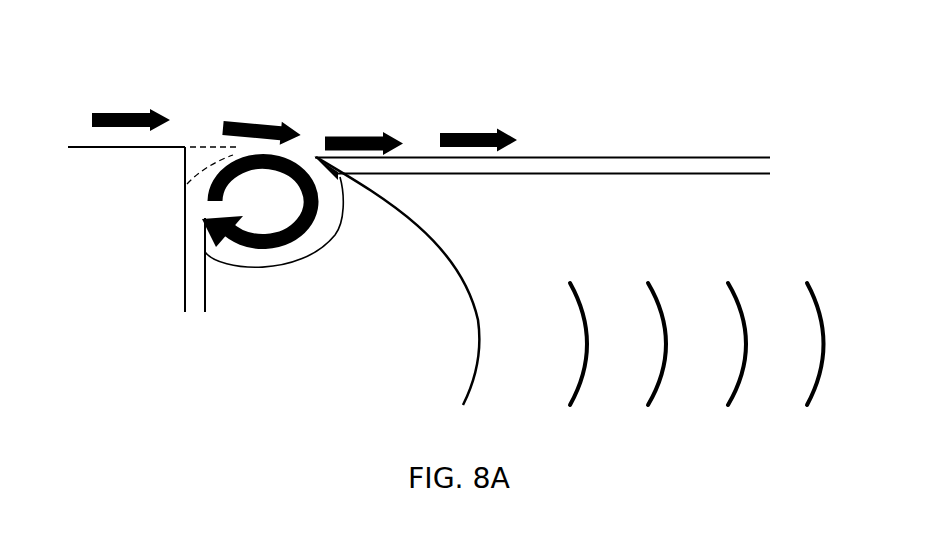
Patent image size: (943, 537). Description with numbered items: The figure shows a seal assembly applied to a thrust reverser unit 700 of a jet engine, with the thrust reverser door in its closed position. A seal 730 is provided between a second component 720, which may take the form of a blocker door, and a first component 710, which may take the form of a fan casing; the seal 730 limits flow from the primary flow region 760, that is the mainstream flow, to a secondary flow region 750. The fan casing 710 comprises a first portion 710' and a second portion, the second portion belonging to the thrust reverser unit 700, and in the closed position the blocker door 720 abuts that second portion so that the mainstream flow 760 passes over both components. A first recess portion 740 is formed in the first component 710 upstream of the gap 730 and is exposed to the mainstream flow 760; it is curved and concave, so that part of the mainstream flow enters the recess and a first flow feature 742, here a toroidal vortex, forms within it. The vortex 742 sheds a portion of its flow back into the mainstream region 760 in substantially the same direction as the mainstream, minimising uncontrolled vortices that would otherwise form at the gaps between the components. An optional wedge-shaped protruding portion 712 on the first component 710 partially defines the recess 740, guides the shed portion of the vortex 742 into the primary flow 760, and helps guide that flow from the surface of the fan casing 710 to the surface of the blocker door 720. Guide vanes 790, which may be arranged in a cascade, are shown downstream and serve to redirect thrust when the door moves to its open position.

The thrust reverser unit 700 is at (516, 70).
The first component 710 is at (180, 288).
The first portion of the first component 710' is at (149, 253).
The protruding portion 712 is at (200, 157).
The second component 720 is at (780, 163).
The seal 730 is at (350, 180).
The first recess portion 740 is at (331, 263).
The first flow feature 742 is at (262, 204).
The secondary flow region 750 is at (573, 140).
The primary flow region 760 is at (121, 112).
The guide vanes 790 is at (577, 396).